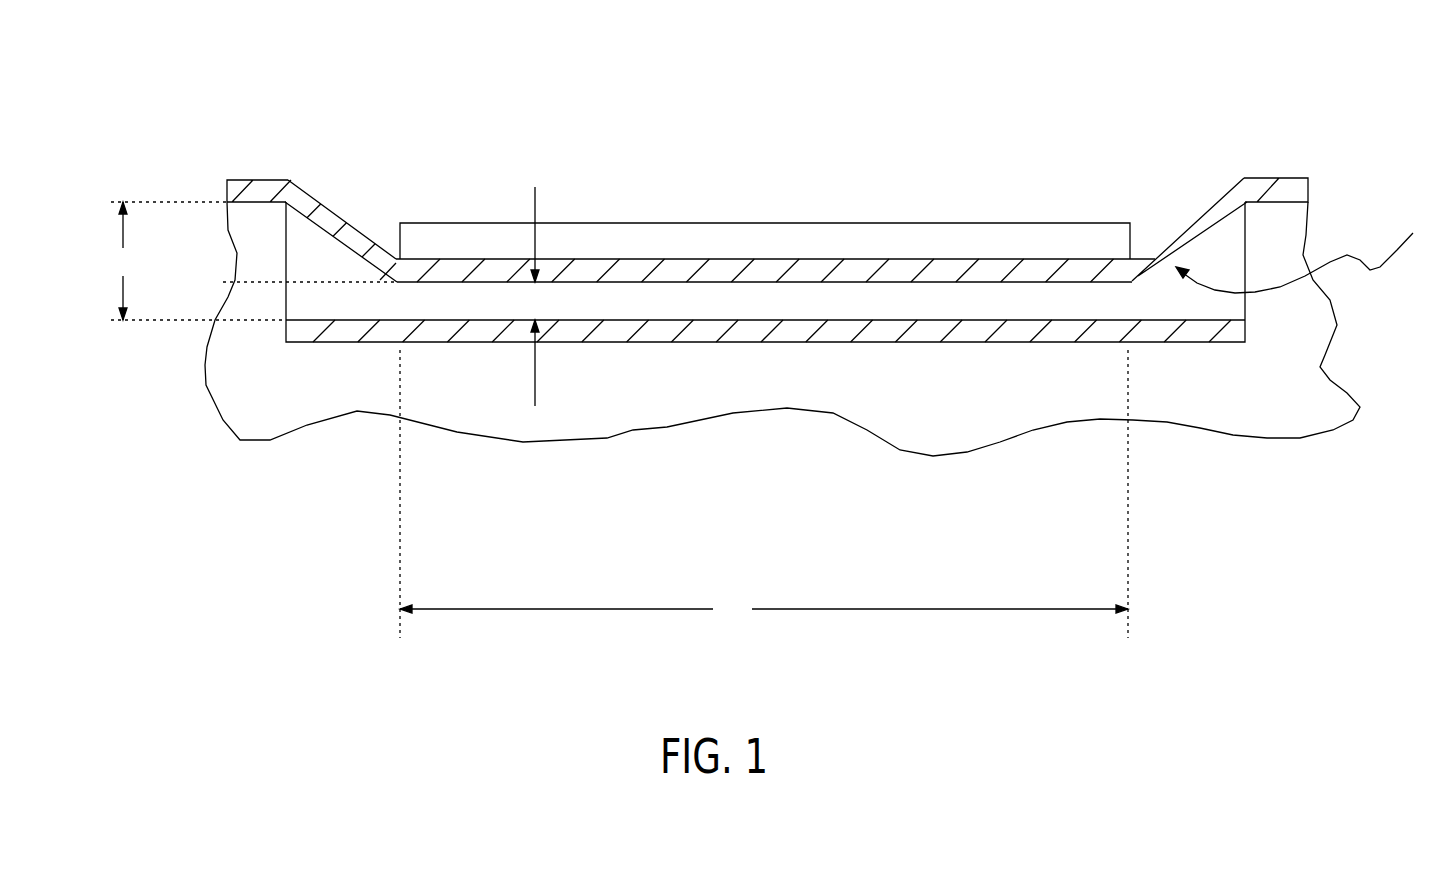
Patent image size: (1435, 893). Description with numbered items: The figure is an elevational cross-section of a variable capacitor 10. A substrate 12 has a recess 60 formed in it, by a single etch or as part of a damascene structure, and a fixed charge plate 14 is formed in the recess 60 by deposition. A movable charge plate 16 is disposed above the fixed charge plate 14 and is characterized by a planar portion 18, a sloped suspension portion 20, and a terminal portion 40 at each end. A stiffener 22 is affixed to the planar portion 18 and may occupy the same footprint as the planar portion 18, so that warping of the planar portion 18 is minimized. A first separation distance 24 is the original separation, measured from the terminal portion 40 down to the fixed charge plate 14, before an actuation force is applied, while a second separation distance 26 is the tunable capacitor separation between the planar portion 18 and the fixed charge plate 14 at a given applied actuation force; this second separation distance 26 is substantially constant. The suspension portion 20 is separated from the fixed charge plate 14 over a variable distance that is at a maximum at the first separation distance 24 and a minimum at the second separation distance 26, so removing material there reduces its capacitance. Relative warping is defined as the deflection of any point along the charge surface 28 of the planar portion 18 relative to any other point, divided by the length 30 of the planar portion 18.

The variable capacitor 10 is at (703, 107).
The substrate 12 is at (742, 387).
The fixed charge plate 14 is at (925, 325).
The movable charge plate 16 is at (1304, 245).
The planar portion 18 is at (930, 270).
The suspension portion 20 is at (323, 217).
The stiffener 22 is at (787, 232).
The first separation distance 24 is at (254, 261).
The second separation distance 26 is at (535, 296).
The charge surface 28 is at (653, 275).
The length 30 is at (764, 494).
The terminal portion 40 is at (234, 188).
The recess 60 is at (353, 308).